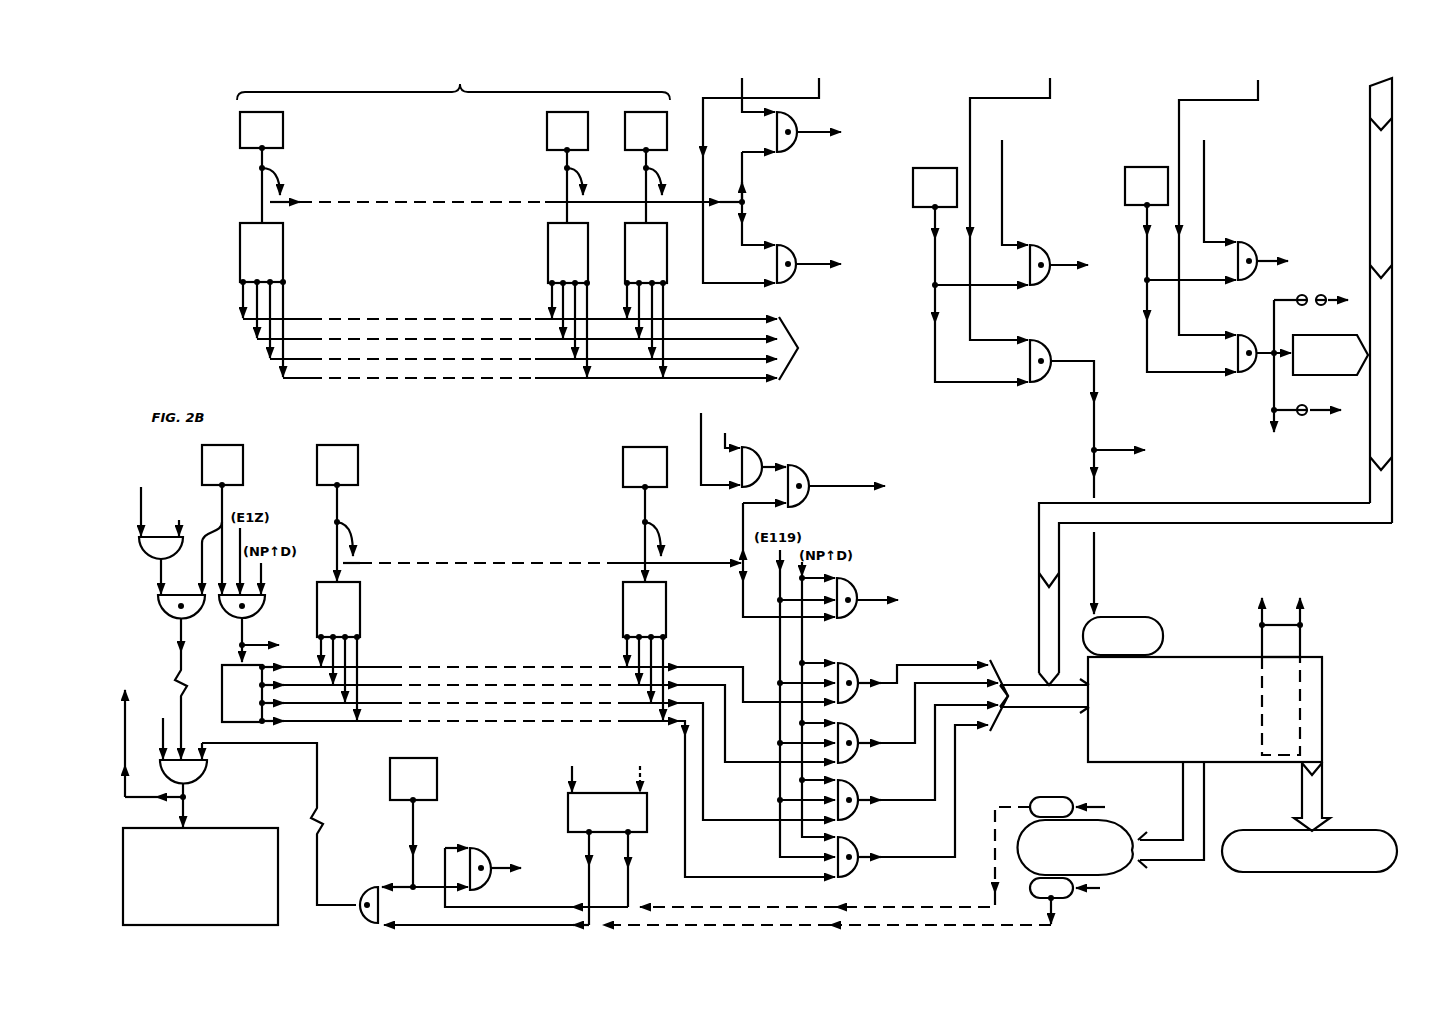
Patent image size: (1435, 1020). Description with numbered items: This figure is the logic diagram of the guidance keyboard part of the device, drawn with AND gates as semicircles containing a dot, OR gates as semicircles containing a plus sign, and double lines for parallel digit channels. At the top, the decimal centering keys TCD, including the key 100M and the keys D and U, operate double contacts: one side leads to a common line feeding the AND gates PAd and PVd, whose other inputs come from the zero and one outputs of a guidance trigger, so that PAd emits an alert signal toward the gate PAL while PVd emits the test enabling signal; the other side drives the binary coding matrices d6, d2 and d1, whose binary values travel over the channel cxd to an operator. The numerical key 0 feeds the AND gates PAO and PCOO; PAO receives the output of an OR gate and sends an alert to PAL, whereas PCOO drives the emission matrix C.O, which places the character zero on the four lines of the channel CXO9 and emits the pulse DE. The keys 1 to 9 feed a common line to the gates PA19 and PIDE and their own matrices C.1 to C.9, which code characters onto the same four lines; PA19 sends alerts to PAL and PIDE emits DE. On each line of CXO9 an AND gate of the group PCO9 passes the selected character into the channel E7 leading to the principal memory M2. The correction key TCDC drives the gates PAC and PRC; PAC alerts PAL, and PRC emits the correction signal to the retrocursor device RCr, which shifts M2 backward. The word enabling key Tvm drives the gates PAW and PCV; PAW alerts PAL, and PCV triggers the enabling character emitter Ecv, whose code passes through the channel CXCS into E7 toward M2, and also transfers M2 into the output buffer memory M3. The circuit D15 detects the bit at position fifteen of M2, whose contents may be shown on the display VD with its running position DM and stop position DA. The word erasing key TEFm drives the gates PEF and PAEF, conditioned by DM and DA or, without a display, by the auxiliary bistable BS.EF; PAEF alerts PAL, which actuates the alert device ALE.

The decimal centering keys TCD is at (453, 81).
The 100 M block 100M is at (261, 130).
The D block D is at (567, 131).
The U block U is at (646, 131).
The binary coding matrix d6 is at (261, 252).
The binary coding matrix d2 is at (568, 253).
The binary coding matrix d1 is at (646, 253).
The channel cxd is at (535, 329).
The AND gate PAd is at (791, 170).
The AND gate PVd is at (832, 270).
The character correction key TCDC is at (935, 187).
The AND gate PAC is at (1028, 220).
The AND gate PRC is at (1109, 419).
The word enabling key Tvm is at (1146, 186).
The AND gate PAW is at (1237, 216).
The AND gate PCV is at (1304, 374).
The enabling character emitter Ecv is at (1330, 355).
The channel CXCS is at (1220, 372).
The channel E7 is at (1039, 695).
The retrocursor device RCr is at (1123, 593).
The principal memory M2 is at (1205, 709).
The bit detecting circuit D15 is at (1291, 663).
The output buffer memory M3 is at (1309, 817).
The display apparatus VD is at (1111, 818).
The running position DM is at (892, 852).
The stop position DA is at (868, 901).
The numerical key 0 is at (222, 519).
The AND gate PAO is at (164, 677).
The AND gate PCOO is at (268, 628).
The emission matrix C.O is at (242, 693).
The channel CXO9 is at (547, 763).
The numerical key 1 is at (529, 513).
The coding matrix C.1 is at (338, 651).
The numerical key 9 is at (645, 514).
The coding matrix C.9 is at (644, 651).
The AND gate PA19 is at (832, 537).
The AND gate PIDE is at (857, 598).
The AND gates PCO9 is at (887, 763).
The alert gate PAL is at (230, 787).
The alert device ALE is at (200, 876).
The word erasing key TEFm is at (425, 824).
The AND gate PAEF is at (468, 895).
The AND gate PEF is at (536, 869).
The auxiliary bistable BS.EF is at (607, 837).